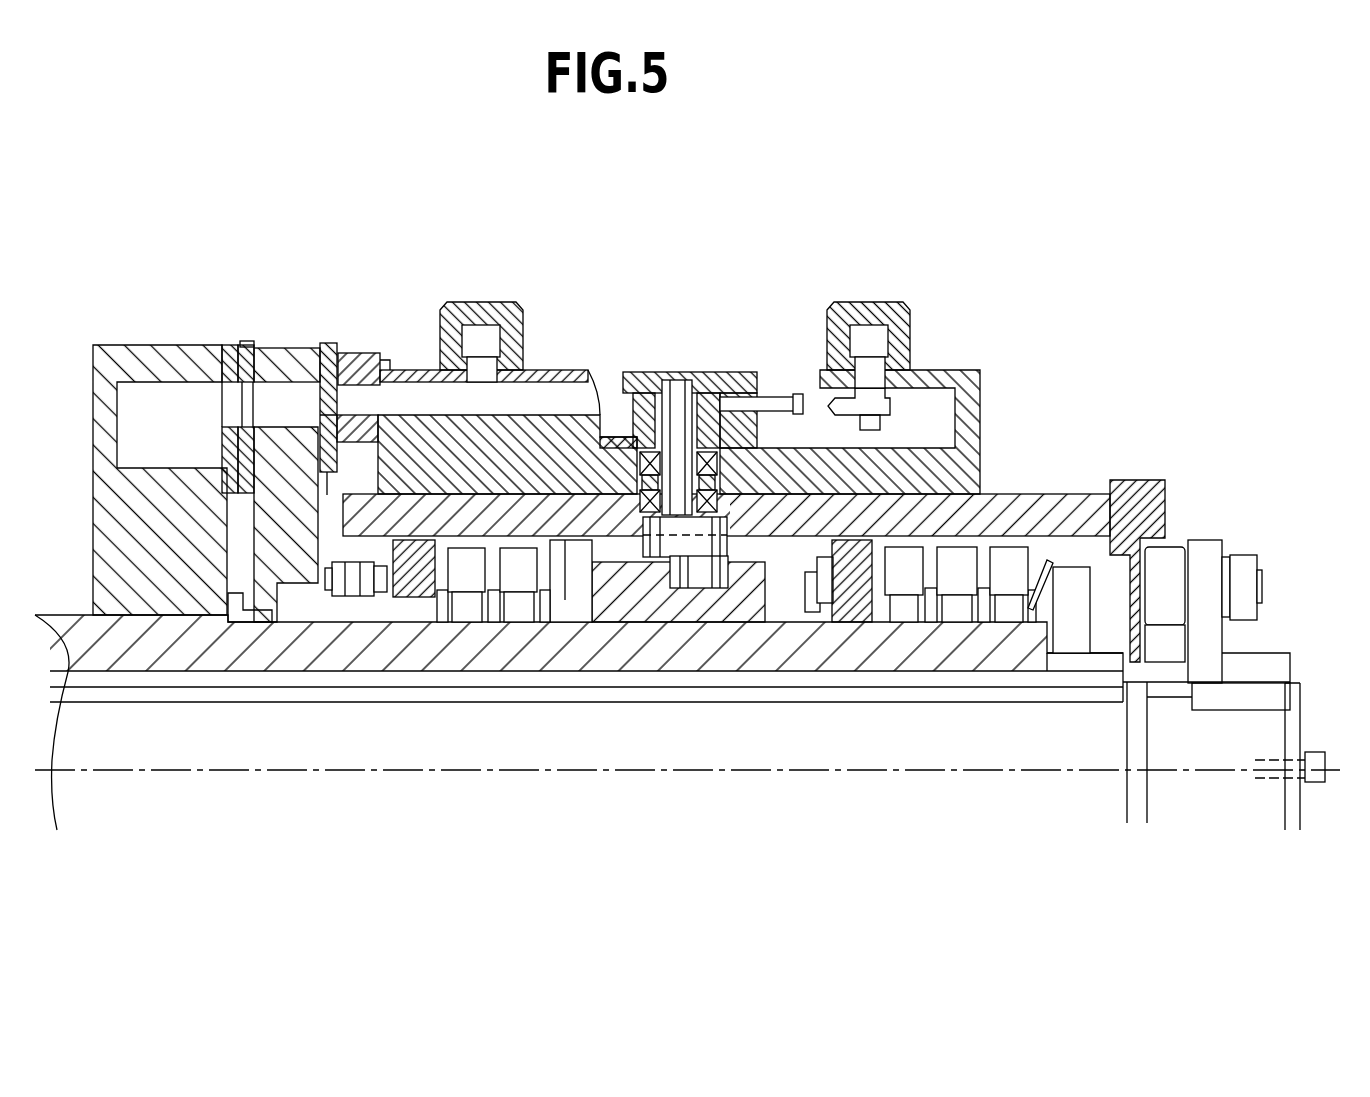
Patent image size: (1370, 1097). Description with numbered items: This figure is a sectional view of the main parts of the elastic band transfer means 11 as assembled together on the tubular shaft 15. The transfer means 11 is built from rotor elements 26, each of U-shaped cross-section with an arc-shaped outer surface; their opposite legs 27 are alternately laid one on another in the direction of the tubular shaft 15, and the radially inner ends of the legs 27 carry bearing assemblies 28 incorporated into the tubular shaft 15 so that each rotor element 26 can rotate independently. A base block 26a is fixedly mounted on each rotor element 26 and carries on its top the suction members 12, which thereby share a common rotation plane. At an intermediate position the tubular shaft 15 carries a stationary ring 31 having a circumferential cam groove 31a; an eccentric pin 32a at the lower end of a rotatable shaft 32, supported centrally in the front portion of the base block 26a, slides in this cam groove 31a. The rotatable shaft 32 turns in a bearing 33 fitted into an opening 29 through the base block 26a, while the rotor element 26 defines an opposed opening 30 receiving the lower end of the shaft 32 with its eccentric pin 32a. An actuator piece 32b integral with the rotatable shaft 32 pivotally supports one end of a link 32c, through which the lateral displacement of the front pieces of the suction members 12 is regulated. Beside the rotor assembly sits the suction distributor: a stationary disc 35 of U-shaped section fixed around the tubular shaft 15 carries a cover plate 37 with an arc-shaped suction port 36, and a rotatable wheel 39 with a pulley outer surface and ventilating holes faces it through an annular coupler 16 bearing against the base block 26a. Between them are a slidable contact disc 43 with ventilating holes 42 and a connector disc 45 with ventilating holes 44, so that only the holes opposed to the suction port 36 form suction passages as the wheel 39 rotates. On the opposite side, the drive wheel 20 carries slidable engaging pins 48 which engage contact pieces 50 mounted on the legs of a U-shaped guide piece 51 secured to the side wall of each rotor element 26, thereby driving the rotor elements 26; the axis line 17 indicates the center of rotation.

The elastic band transfer means 11 is at (1033, 453).
The suction member 12 is at (486, 300).
The tubular shaft 15 is at (85, 640).
The annular coupler 16 is at (397, 360).
The spindle axis 17 is at (117, 737).
The drive wheel 20 is at (1203, 557).
The rotor element 26 is at (1038, 502).
The base block 26a is at (947, 477).
The leg 27 is at (403, 583).
The bearing assembly 28 is at (415, 600).
The opening 29 is at (622, 500).
The opening 30 is at (750, 575).
The stationary ring 31 is at (735, 548).
The circumferential cam groove 31a is at (660, 555).
The rotatable shaft 32 is at (677, 410).
The eccentric pin 32a is at (700, 580).
The actuator piece 32b is at (707, 380).
The link 32c is at (778, 393).
The bearing 33 is at (615, 438).
The stationary disc 35 is at (123, 343).
The suction port 36 is at (223, 407).
The cover plate 37 is at (227, 338).
The rotatable wheel 39 is at (293, 350).
The ventilating holes 42 is at (265, 380).
The slidable contact disc 43 is at (247, 407).
The ventilating holes 44 is at (380, 353).
The connector disc 45 is at (325, 345).
The slidable engaging pin 48 is at (1167, 560).
The contact piece 50 is at (1168, 650).
The U-shaped guide piece 51 is at (1150, 480).